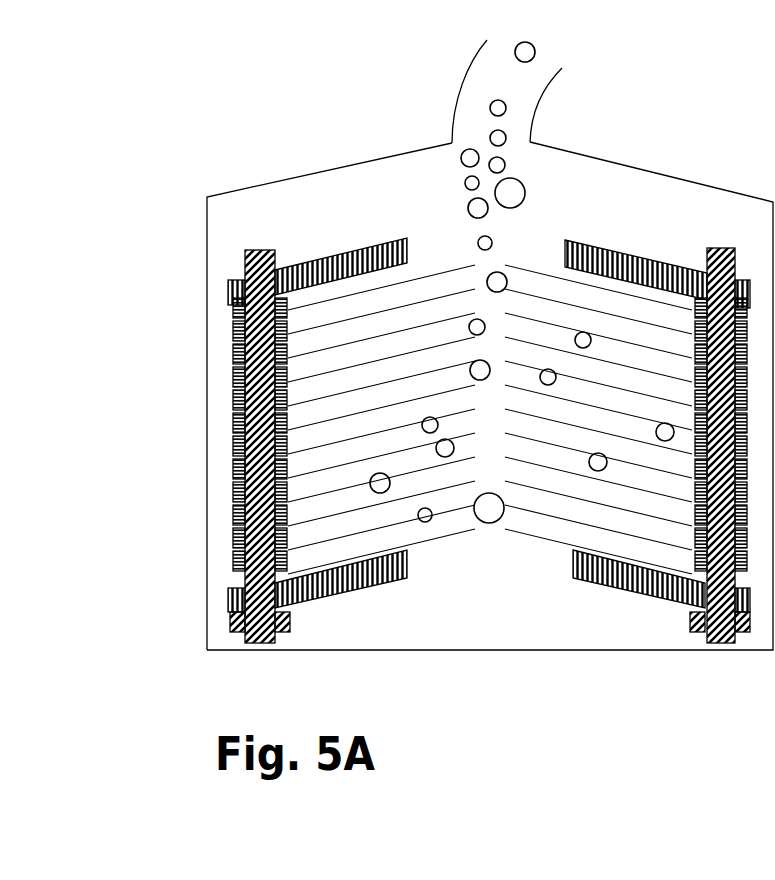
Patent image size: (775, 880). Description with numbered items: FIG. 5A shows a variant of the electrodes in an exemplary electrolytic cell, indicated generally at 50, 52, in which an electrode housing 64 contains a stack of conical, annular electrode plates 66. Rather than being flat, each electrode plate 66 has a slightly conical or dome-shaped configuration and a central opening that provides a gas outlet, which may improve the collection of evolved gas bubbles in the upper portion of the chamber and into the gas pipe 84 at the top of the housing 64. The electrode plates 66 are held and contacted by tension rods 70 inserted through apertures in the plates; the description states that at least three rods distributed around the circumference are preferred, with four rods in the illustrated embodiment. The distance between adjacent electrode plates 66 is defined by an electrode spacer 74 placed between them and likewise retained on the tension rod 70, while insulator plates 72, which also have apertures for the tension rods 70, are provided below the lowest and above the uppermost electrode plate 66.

The thermal management assembly 50 is at (422, 345).
The heat exchanger 52 is at (422, 345).
The electrode housing 64 is at (422, 345).
The electrode plates 66 is at (233, 390).
The tension rod 70 is at (245, 254).
The insulator plates 72 is at (230, 286).
The electrode spacer 74 is at (237, 333).
The gas pipe 84 is at (543, 102).